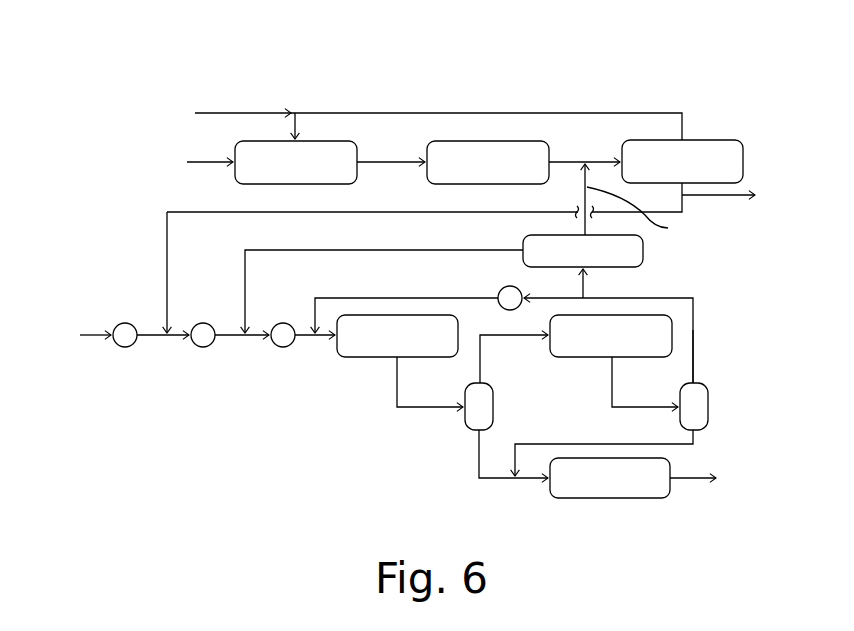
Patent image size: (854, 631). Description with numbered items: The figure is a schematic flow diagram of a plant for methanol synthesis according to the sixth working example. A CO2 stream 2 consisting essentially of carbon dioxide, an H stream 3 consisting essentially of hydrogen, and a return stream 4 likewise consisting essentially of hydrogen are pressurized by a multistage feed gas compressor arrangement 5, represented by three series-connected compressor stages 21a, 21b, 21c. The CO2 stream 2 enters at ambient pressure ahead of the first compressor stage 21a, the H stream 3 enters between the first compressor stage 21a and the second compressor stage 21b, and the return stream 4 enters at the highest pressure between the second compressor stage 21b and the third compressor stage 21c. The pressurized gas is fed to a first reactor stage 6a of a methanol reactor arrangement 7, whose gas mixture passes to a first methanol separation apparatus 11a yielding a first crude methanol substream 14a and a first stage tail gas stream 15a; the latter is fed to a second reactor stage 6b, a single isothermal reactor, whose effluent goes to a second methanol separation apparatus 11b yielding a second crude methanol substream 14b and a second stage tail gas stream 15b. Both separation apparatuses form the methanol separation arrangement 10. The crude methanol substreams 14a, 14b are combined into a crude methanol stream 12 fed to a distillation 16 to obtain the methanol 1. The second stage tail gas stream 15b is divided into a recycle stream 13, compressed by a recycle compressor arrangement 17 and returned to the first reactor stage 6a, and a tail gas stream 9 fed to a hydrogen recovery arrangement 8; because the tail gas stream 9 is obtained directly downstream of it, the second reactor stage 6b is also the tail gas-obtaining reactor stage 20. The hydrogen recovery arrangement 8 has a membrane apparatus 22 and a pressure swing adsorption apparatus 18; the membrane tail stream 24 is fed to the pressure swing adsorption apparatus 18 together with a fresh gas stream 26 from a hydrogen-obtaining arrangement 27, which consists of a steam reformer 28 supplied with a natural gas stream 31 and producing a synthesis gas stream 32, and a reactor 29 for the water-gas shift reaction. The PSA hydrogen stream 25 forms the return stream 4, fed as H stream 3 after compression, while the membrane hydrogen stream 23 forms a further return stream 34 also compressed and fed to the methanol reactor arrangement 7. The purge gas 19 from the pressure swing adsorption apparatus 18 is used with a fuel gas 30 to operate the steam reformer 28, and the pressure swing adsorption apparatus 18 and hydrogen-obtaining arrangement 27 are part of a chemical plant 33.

The methanol 1 is at (690, 483).
The CO2 stream 2 is at (88, 333).
The H stream 3 is at (370, 251).
The return stream 4 is at (370, 251).
The feed gas compressor arrangement 5 is at (132, 305).
The first reactor stage 6a is at (376, 336).
The second reactor stage 6b is at (611, 336).
The methanol reactor arrangement 7 is at (729, 509).
The hydrogen recovery arrangement 8 is at (639, 203).
The tail gas stream 9 is at (591, 291).
The methanol separation arrangement 10 is at (608, 393).
The first methanol separation apparatus 11a is at (495, 416).
The second methanol separation apparatus 11b is at (710, 416).
The crude methanol stream 12 is at (528, 481).
The recycle stream 13 is at (690, 298).
The first crude methanol substream 14a is at (475, 460).
The second crude methanol substream 14b is at (700, 447).
The first stage tail gas stream 15a is at (487, 338).
The second stage tail gas stream 15b is at (697, 376).
The distillation 16 is at (610, 478).
The recycle compressor arrangement 17 is at (498, 290).
The pressure swing adsorption apparatus 18 is at (688, 167).
The purge gas 19 is at (610, 111).
The tail gas-obtaining reactor stage 20 is at (611, 336).
The first compressor stage 21a is at (118, 348).
The second compressor stage 21b is at (196, 350).
The third compressor stage 21c is at (271, 322).
The membrane apparatus 22 is at (583, 251).
The membrane hydrogen stream 23 is at (365, 274).
The membrane tail stream 24 is at (643, 217).
The PSA hydrogen stream 25 is at (165, 250).
The fresh gas stream 26 is at (566, 160).
The hydrogen-obtaining arrangement 27 is at (392, 162).
The steam reformer 28 is at (296, 162).
The reactor 29 is at (488, 162).
The fuel gas 30 is at (232, 112).
The natural gas stream 31 is at (206, 162).
The synthesis gas stream 32 is at (388, 160).
The chemical plant 33 is at (365, 90).
The further return stream 34 is at (303, 249).